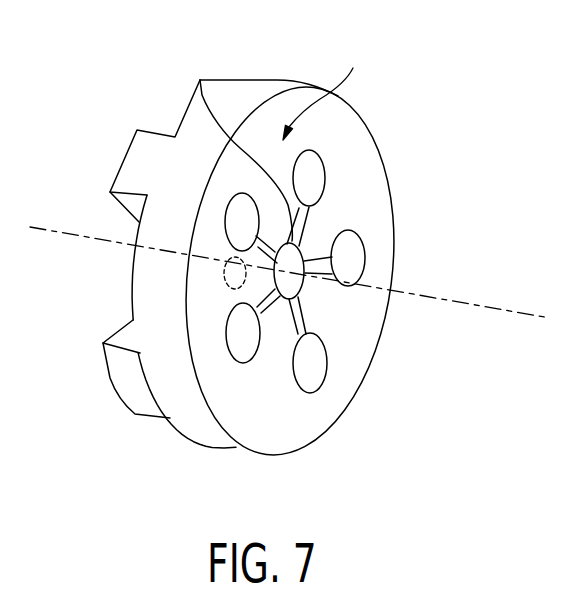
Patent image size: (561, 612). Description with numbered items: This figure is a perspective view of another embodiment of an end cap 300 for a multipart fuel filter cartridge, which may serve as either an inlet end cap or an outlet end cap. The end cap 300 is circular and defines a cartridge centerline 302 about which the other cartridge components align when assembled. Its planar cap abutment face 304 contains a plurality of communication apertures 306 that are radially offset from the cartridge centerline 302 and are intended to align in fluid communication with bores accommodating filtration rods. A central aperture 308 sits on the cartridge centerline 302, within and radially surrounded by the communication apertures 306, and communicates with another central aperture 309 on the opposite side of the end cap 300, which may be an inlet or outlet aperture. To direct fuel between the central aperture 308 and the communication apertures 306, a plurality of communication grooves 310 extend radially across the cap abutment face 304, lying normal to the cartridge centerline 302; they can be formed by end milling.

The end cap 300 is at (273, 82).
The cartridge centerline 302 is at (477, 300).
The cap abutment face 304 is at (327, 86).
The communication apertures 306 is at (230, 213).
The central aperture 308 is at (298, 289).
The central aperture 309 is at (225, 272).
The communication grooves 310 is at (273, 244).